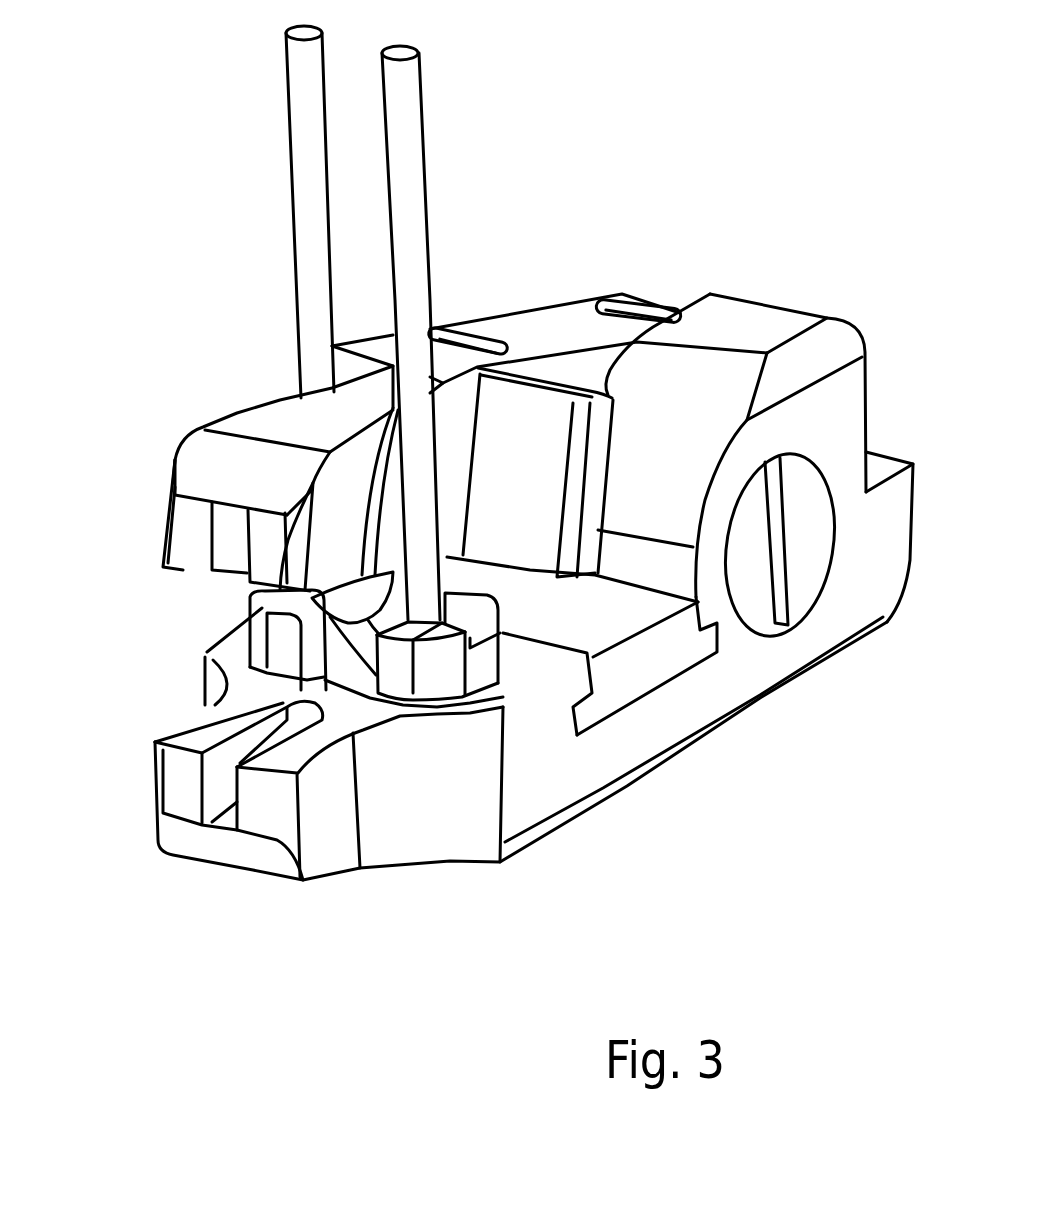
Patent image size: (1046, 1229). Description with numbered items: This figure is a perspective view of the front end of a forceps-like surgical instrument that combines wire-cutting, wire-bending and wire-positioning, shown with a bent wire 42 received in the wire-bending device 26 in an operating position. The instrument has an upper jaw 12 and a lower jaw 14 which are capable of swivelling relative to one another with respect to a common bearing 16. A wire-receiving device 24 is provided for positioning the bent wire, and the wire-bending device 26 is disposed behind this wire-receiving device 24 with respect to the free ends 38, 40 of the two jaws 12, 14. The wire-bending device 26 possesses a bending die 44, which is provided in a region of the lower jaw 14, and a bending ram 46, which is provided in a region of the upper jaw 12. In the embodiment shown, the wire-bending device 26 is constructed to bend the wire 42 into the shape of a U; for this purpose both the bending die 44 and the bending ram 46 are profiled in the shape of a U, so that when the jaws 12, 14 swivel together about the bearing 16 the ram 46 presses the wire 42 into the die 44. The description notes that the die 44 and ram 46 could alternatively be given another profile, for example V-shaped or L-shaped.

The upper jaw 12 is at (543, 325).
The lower jaw 14 is at (627, 745).
The common bearing 16 is at (797, 583).
The wire-receiving device 24 is at (232, 547).
The wire-bending device 26 is at (348, 698).
The free end of the upper jaw 38 is at (188, 543).
The free end of the lower jaw 40 is at (262, 819).
The wire 42 is at (303, 207).
The bending die 44 is at (425, 672).
The bending ram 46 is at (345, 603).